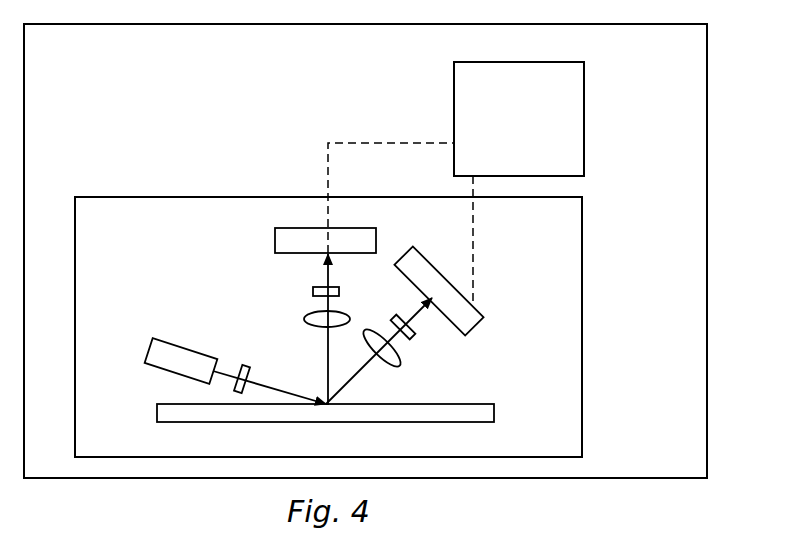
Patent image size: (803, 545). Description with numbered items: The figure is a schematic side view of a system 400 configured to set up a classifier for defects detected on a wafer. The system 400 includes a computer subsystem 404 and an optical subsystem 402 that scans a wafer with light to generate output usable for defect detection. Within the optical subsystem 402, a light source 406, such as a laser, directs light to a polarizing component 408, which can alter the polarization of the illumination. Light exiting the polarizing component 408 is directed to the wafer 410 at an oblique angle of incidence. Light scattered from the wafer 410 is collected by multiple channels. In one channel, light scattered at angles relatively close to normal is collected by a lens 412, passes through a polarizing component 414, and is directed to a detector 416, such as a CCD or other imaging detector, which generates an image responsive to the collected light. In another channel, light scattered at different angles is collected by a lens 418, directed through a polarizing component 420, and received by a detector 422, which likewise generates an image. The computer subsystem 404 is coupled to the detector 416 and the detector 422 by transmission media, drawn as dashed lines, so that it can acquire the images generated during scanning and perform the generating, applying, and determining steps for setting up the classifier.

The system 400 is at (707, 98).
The optical subsystem 402 is at (582, 300).
The computer subsystem 404 is at (456, 183).
The light source 406 is at (172, 342).
The polarizing component 408 is at (243, 366).
The wafer 410 is at (165, 404).
The lens 412 is at (310, 318).
The polarizing component 414 is at (313, 290).
The detector 416 is at (275, 245).
The lens 418 is at (397, 363).
The polarizing component 420 is at (412, 334).
The detector 422 is at (477, 325).